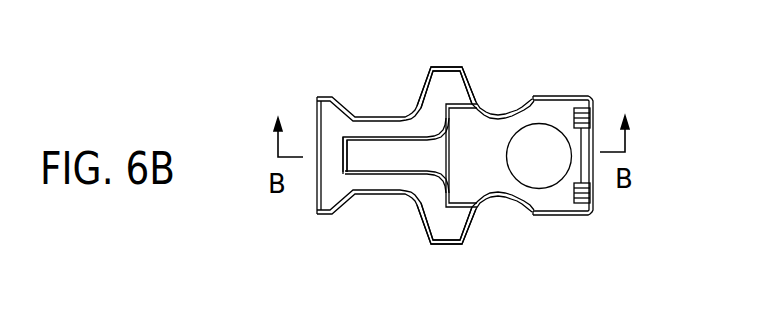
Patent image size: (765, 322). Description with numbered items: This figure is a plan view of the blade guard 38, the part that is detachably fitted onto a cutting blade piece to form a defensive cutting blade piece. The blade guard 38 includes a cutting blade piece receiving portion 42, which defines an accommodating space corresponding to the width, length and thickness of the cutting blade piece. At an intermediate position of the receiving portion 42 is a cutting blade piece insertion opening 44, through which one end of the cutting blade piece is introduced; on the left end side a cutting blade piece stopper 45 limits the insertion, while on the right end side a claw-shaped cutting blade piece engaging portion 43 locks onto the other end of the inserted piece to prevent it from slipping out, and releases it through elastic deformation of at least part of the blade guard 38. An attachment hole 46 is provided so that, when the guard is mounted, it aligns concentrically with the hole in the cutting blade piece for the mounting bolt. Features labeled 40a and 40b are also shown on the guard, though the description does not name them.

The blade guard 38 is at (478, 68).
The first arm 40a is at (321, 96).
The second arm 40b is at (442, 67).
The cutting blade piece receiving portion 42 is at (397, 153).
The cutting blade piece engaging portion 43 is at (591, 118).
The cutting blade piece insertion opening 44 is at (452, 117).
The cutting blade piece stopper 45 is at (346, 152).
The attachment hole 46 is at (531, 129).